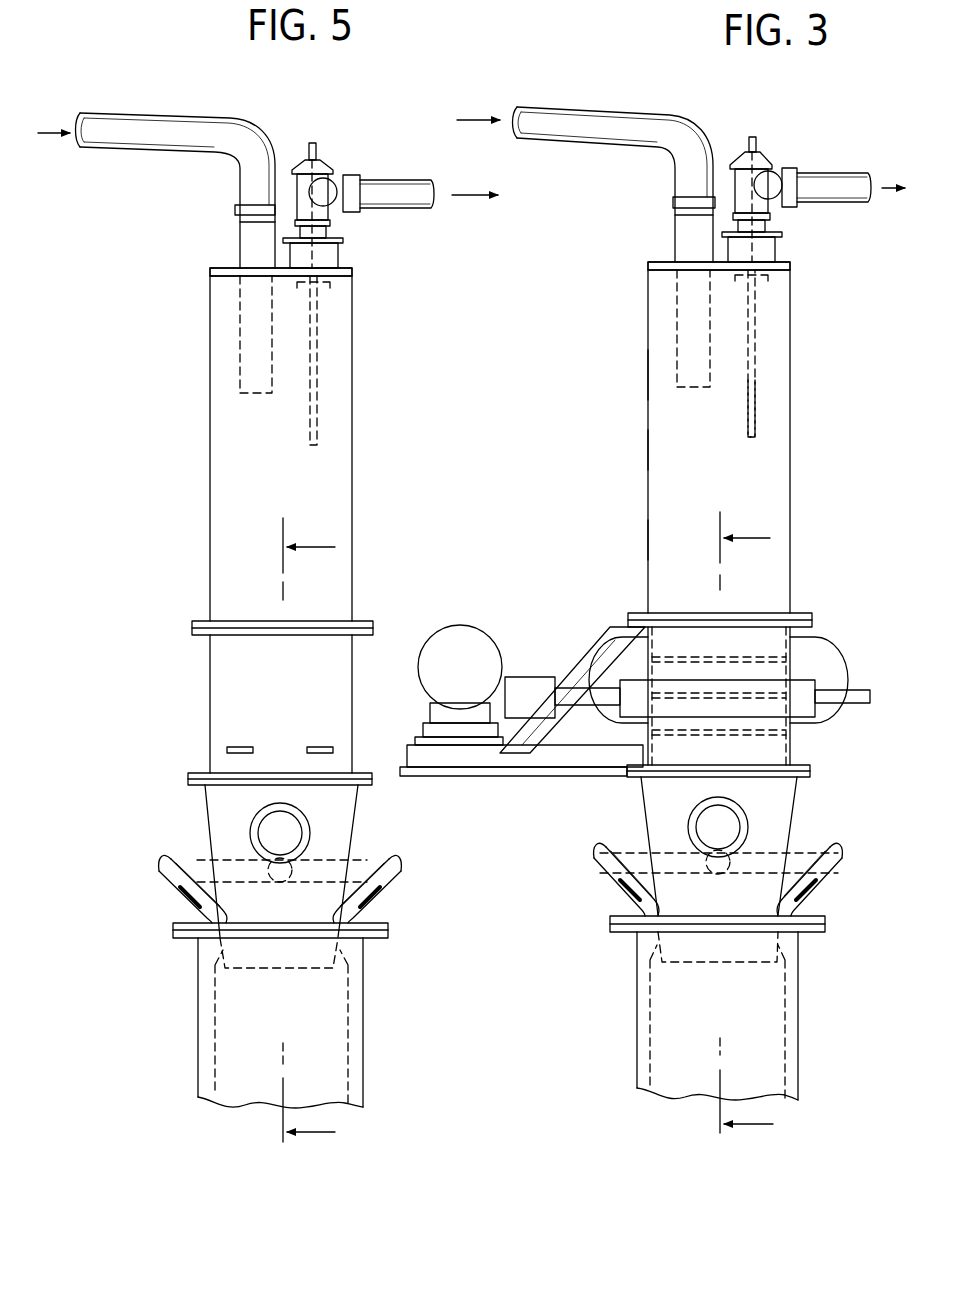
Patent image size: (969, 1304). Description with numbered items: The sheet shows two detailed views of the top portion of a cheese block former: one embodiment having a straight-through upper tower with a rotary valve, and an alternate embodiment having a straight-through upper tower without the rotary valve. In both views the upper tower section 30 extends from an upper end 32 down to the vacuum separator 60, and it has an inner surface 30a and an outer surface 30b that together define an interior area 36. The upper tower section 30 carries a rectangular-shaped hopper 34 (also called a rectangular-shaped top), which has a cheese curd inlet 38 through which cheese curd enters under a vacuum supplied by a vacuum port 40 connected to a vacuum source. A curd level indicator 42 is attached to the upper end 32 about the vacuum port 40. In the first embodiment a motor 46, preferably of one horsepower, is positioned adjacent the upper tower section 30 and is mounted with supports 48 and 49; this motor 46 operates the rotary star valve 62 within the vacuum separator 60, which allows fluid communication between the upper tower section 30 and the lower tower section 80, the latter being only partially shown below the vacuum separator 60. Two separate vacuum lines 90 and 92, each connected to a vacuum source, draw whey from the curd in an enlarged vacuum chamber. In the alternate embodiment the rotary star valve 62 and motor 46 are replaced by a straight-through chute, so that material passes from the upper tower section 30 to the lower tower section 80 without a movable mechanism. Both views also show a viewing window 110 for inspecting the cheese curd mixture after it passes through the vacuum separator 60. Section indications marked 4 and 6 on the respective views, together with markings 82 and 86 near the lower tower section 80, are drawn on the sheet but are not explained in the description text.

In FIG. 5, the upper tower section 30 is at (225, 455).
In FIG. 3, the upper tower section 30 is at (768, 482).
In FIG. 3, the inner surface 30a is at (652, 440).
In FIG. 3, the outer surface 30b is at (648, 540).
In FIG. 5, the upper end 32 is at (223, 265).
In FIG. 3, the upper end 32 is at (787, 257).
In FIG. 3, the rectangular-shaped hopper 34 is at (657, 378).
In FIG. 5, the interior area 36 is at (296, 446).
In FIG. 3, the interior area 36 is at (734, 444).
In FIG. 5, the cheese curd inlet 38 is at (155, 117).
In FIG. 3, the cheese curd inlet 38 is at (593, 108).
In FIG. 5, the vacuum port 40 is at (387, 178).
In FIG. 3, the vacuum port 40 is at (833, 172).
In FIG. 3, the curd level indicator 42 is at (757, 395).
In FIG. 3, the motor 46 is at (460, 665).
In FIG. 3, the support 48 is at (520, 742).
In FIG. 3, the support 49 is at (453, 758).
In FIG. 5, the vacuum separator 60 is at (190, 705).
In FIG. 3, the vacuum separator 60 is at (850, 653).
In FIG. 3, the rotary star valve 62 is at (723, 690).
In FIG. 5, the lower tower section 80 is at (233, 1053).
In FIG. 3, the lower tower section 80 is at (663, 1015).
In FIG. 3, the outlet passage 82 is at (733, 1007).
In FIG. 5, the bottom flange 86 is at (177, 930).
In FIG. 3, the vacuum line 90 is at (602, 883).
In FIG. 3, the vacuum line 92 is at (842, 880).
In FIG. 5, the viewing window 110 is at (280, 835).
In FIG. 3, the viewing window 110 is at (718, 827).
In FIG. 3, the section line 4- 4 is at (737, 826).
In FIG. 5, the section line 6- 6 is at (300, 831).